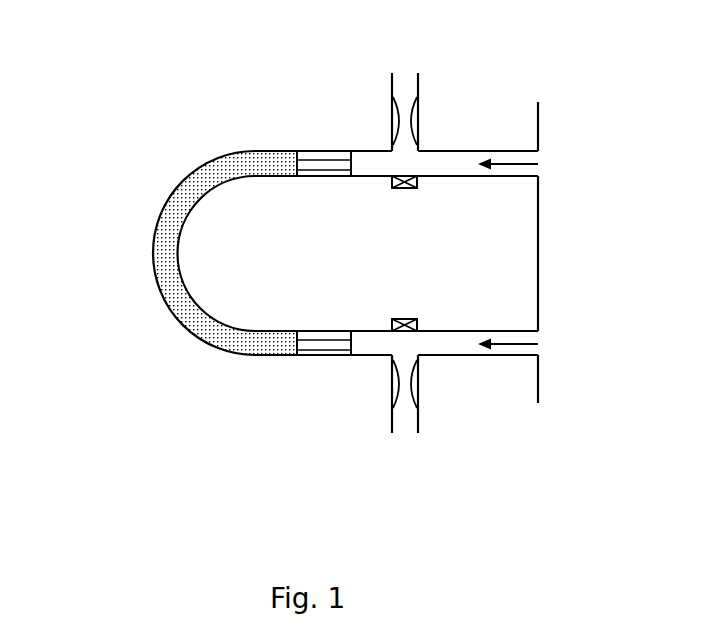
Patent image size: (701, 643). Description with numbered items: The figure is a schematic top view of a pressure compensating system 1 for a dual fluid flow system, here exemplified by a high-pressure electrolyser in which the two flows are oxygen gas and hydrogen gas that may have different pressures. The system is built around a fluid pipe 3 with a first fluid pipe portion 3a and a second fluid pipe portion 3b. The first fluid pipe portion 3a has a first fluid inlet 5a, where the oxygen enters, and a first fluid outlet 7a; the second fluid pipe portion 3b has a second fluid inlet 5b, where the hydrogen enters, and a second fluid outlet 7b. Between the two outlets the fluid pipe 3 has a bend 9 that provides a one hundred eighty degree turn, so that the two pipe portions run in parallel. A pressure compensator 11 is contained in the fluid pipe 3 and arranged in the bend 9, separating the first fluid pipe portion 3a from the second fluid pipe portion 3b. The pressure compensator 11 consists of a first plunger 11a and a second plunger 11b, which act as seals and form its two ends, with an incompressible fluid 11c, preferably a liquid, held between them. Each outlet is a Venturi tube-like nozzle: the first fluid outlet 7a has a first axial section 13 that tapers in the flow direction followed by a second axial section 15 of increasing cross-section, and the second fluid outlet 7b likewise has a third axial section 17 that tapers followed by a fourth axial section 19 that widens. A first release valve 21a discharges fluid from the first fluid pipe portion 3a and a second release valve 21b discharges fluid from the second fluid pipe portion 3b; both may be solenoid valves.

The pressure compensating system 1 is at (114, 51).
The fluid pipe 3 is at (338, 281).
The first fluid pipe portion 3a is at (473, 150).
The second fluid pipe portion 3b is at (483, 357).
The first fluid inlet 5a is at (531, 144).
The second fluid inlet 5b is at (529, 368).
The first fluid outlet 7a is at (392, 86).
The second fluid outlet 7b is at (392, 366).
The bend 9 is at (196, 170).
The pressure compensator 11 is at (167, 334).
The first plunger 11a is at (337, 177).
The second plunger 11b is at (313, 331).
The incompressible fluid 11c is at (163, 253).
The first axial section 13 is at (423, 117).
The second axial section 15 is at (423, 95).
The third axial section 17 is at (423, 360).
The fourth axial section 19 is at (423, 389).
The first release valve 21a is at (406, 189).
The second release valve 21b is at (404, 319).